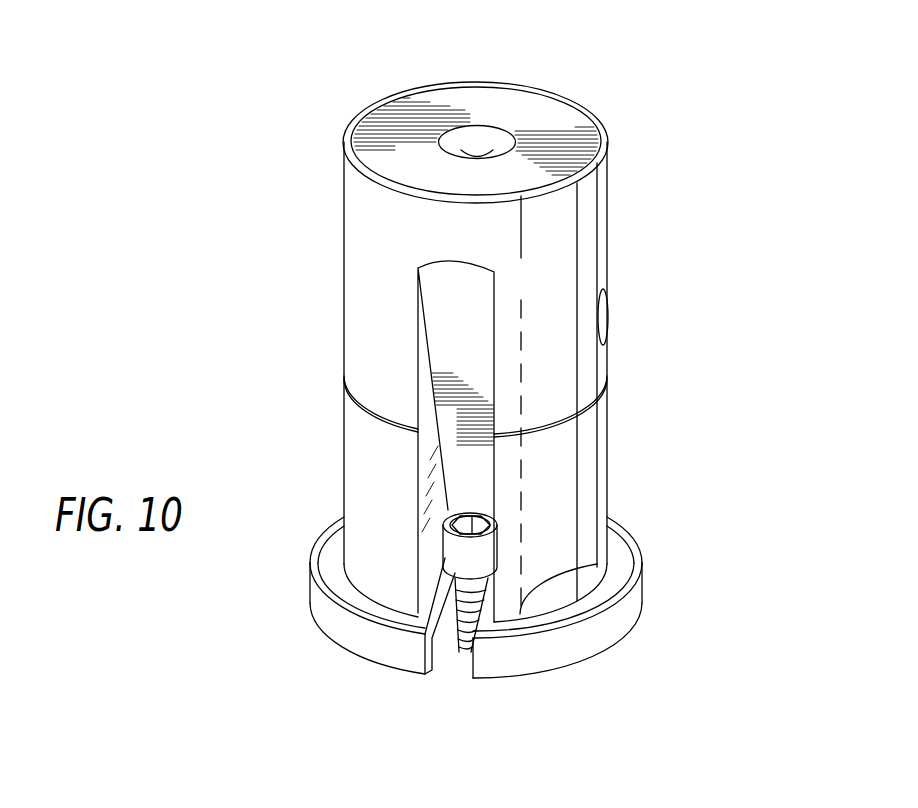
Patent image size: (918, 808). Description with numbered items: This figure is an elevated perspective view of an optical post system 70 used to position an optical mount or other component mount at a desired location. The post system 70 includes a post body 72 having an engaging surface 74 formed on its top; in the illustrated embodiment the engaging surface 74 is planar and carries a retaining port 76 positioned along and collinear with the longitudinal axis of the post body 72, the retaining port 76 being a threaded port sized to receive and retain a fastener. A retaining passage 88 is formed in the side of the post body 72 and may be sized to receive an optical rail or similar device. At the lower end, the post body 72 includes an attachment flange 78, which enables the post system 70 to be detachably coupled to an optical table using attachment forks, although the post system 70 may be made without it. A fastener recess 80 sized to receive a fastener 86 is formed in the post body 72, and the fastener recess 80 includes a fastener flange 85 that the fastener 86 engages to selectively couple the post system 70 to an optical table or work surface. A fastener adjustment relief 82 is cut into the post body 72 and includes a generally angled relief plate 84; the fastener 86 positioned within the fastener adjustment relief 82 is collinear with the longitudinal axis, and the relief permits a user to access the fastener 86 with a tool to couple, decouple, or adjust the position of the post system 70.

The post system 70 is at (662, 103).
The post body 72 is at (375, 299).
The engaging surface 74 is at (383, 120).
The retaining port 76 is at (495, 132).
The attachment flange 78 is at (323, 602).
The fastener recess 80 is at (445, 665).
The fastener adjustment relief 82 is at (470, 467).
The angled relief plate 84 is at (445, 357).
The fastener flange 85 is at (428, 607).
The fastener 86 is at (457, 645).
The retaining passage 88 is at (598, 315).